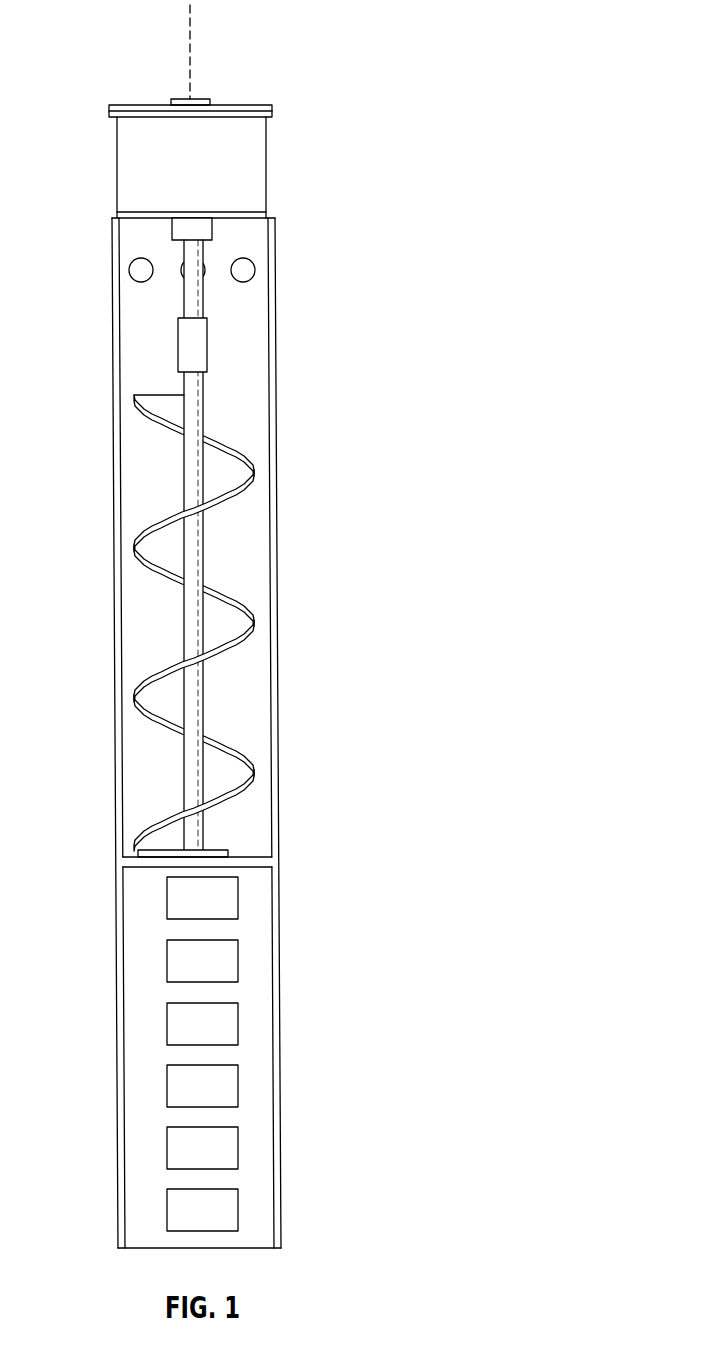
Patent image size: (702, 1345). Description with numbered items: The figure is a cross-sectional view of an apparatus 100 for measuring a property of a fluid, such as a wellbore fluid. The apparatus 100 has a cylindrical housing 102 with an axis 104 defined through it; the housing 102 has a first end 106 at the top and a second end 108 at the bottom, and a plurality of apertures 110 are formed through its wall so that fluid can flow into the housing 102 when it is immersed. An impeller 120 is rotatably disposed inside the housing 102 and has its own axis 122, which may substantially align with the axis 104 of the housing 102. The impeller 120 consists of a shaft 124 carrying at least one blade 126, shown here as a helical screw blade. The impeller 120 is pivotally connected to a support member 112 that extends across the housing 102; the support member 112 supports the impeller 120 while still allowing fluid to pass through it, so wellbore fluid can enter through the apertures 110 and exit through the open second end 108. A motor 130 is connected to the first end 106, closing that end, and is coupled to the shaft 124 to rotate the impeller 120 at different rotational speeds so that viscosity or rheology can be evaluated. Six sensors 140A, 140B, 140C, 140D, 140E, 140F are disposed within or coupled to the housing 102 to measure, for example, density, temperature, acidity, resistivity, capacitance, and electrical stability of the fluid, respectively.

The apparatus 100 is at (312, 400).
The housing 102 is at (276, 330).
The axis 104 is at (193, 78).
The first end 106 is at (275, 218).
The second end 108 is at (283, 1248).
The apertures 110 is at (129, 269).
The support member 112 is at (268, 860).
The impeller 120 is at (122, 467).
The axis 122 is at (193, 43).
The shaft 124 is at (207, 564).
The blade 126 is at (207, 738).
The motor 130 is at (215, 177).
The sensor 140A is at (230, 910).
The sensor 140B is at (230, 973).
The sensor 140C is at (230, 1036).
The sensor 140D is at (230, 1098).
The sensor 140E is at (230, 1160).
The sensor 140F is at (230, 1222).